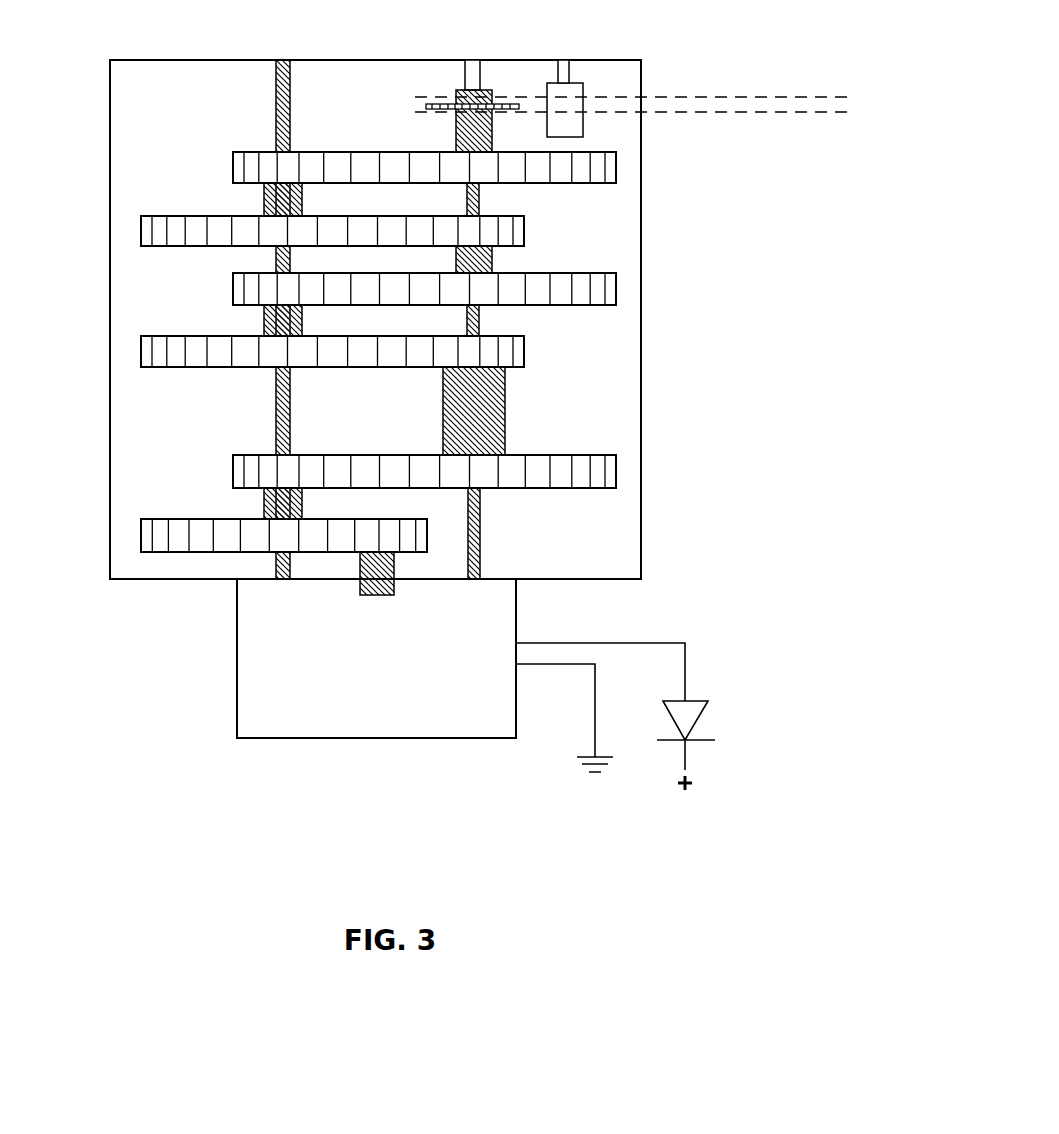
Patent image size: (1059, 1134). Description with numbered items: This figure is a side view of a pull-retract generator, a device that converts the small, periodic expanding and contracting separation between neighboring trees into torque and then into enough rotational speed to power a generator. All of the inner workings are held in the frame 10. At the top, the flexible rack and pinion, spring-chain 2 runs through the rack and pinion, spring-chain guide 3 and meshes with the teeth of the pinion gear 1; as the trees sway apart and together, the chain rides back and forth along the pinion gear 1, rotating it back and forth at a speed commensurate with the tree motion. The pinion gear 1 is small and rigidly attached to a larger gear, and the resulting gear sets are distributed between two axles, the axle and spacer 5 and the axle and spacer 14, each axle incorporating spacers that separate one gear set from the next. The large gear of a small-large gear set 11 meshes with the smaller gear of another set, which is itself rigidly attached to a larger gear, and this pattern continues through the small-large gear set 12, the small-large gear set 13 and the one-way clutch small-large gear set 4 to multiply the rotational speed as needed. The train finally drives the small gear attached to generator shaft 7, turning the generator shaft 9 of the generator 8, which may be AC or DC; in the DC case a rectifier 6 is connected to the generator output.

The pinion gear 1 is at (507, 97).
The rack and pinion, spring-chain 2 is at (727, 97).
The rack and pinion, spring-chain guide 3 is at (583, 120).
The one-way clutch small-large gear set 4 is at (505, 410).
The axle and spacer 5 is at (480, 530).
The rectifier 6 is at (706, 782).
The small gear attached to generator shaft 7 is at (405, 552).
The generator 8 is at (347, 756).
The generator shaft 9 is at (360, 585).
The frame 10 is at (110, 476).
The large gear of a small-large gear set 11 is at (264, 512).
The small-large gear set 12 is at (264, 330).
The small-large gear set 13 is at (264, 208).
The axle and spacer 14 is at (276, 100).